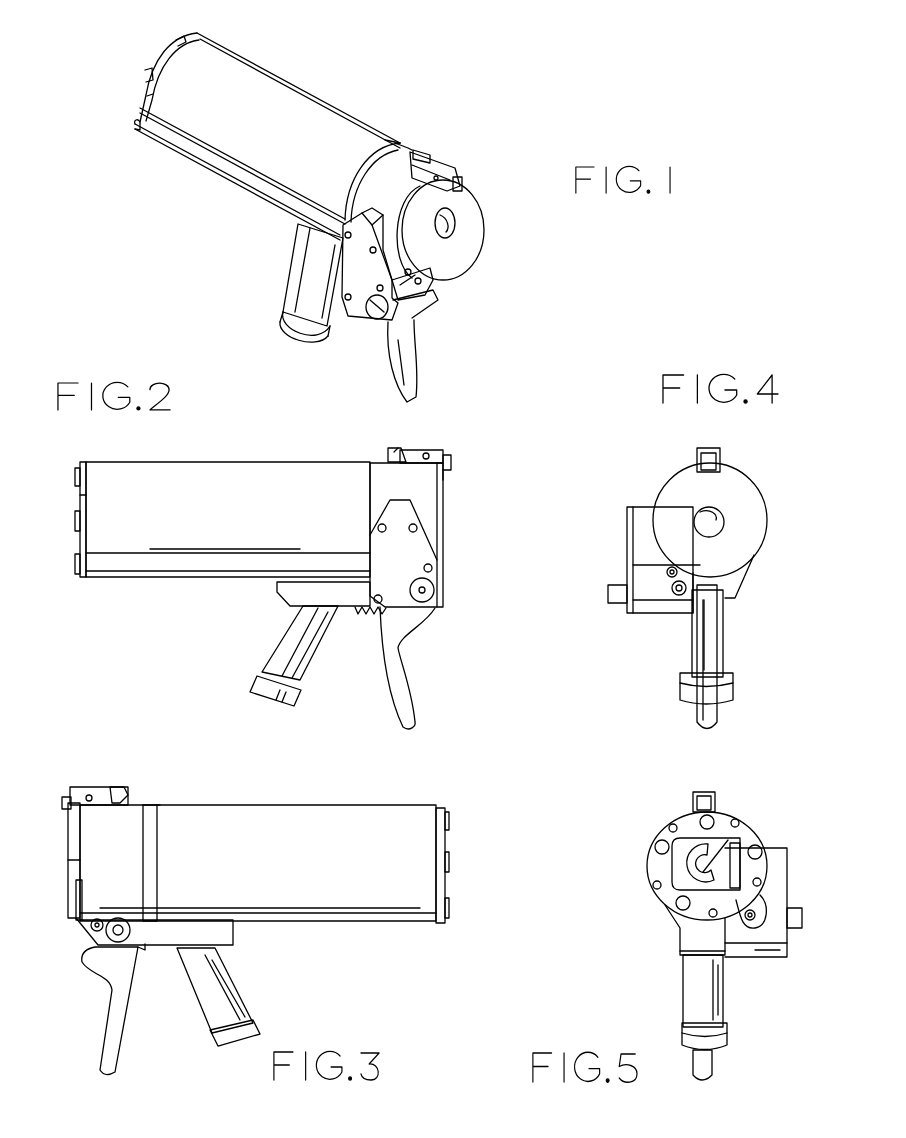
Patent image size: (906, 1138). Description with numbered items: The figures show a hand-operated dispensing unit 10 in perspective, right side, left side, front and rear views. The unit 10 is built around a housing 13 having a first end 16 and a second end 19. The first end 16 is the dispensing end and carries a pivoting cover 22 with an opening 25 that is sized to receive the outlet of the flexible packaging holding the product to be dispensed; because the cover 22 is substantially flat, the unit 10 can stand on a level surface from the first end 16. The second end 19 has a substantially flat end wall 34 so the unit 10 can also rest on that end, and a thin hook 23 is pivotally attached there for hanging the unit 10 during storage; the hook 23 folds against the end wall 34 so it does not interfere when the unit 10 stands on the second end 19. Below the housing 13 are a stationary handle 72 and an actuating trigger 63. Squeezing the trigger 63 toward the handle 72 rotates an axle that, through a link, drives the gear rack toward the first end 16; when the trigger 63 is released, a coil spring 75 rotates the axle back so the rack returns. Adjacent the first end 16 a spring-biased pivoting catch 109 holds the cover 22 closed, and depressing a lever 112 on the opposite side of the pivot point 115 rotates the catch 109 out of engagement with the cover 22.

In FIG. 1, the unit 10 is at (492, 78).
In FIG. 3, the unit 10 is at (218, 758).
In FIG. 1, the housing 13 is at (256, 126).
In FIG. 2, the housing 13 is at (205, 465).
In FIG. 3, the housing 13 is at (278, 862).
In FIG. 1, the first end 16 is at (540, 214).
In FIG. 2, the first end 16 is at (510, 472).
In FIG. 3, the first end 16 is at (30, 905).
In FIG. 1, the second end 19 is at (112, 47).
In FIG. 2, the second end 19 is at (37, 577).
In FIG. 3, the second end 19 is at (490, 790).
In FIG. 5, the second end 19 is at (642, 786).
In FIG. 1, the pivoting cover 22 is at (475, 218).
In FIG. 2, the pivoting cover 22 is at (445, 536).
In FIG. 4, the pivoting cover 22 is at (687, 538).
In FIG. 3, the pivoting cover 22 is at (68, 852).
In FIG. 5, the hook 23 is at (680, 862).
In FIG. 1, the opening 25 is at (450, 228).
In FIG. 4, the opening 25 is at (724, 518).
In FIG. 1, the end wall 34 is at (144, 94).
In FIG. 2, the end wall 34 is at (78, 498).
In FIG. 5, the end wall 34 is at (722, 825).
In FIG. 1, the actuating trigger 63 is at (408, 346).
In FIG. 2, the actuating trigger 63 is at (404, 682).
In FIG. 4, the actuating trigger 63 is at (722, 704).
In FIG. 3, the actuating trigger 63 is at (115, 1020).
In FIG. 5, the actuating trigger 63 is at (708, 1060).
In FIG. 1, the stationary handle 72 is at (300, 284).
In FIG. 2, the stationary handle 72 is at (298, 630).
In FIG. 4, the stationary handle 72 is at (706, 647).
In FIG. 3, the stationary handle 72 is at (228, 970).
In FIG. 5, the stationary handle 72 is at (706, 982).
In FIG. 2, the coil spring 75 is at (370, 618).
In FIG. 1, the pivoting catch 109 is at (470, 182).
In FIG. 2, the pivoting catch 109 is at (455, 460).
In FIG. 4, the pivoting catch 109 is at (720, 460).
In FIG. 3, the pivoting catch 109 is at (60, 800).
In FIG. 1, the lever 112 is at (414, 148).
In FIG. 2, the lever 112 is at (400, 448).
In FIG. 3, the lever 112 is at (120, 788).
In FIG. 1, the pivot point 115 is at (462, 160).
In FIG. 2, the pivot point 115 is at (424, 463).
In FIG. 3, the pivot point 115 is at (90, 792).